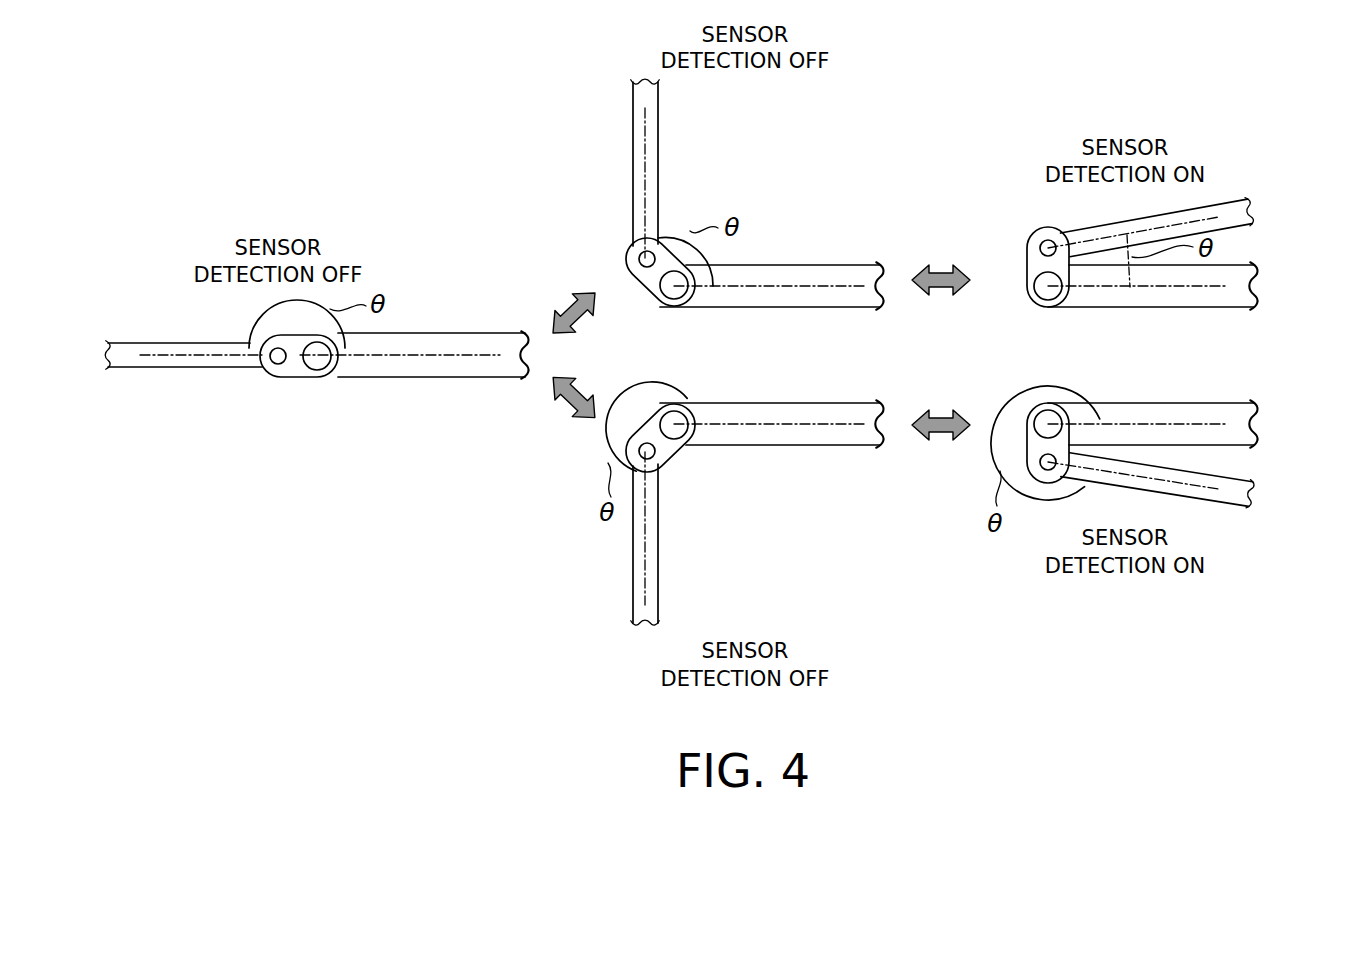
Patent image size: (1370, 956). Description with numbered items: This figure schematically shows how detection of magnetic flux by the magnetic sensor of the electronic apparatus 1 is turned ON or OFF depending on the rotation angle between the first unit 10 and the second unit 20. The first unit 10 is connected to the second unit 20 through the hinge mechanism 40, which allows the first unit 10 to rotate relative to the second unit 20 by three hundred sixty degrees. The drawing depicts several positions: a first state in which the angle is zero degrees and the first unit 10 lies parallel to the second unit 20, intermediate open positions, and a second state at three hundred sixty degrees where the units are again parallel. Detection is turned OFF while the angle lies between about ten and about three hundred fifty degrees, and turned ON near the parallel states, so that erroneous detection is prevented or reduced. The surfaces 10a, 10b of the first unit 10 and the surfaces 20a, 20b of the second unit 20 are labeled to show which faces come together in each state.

The electronic apparatus 1 is at (203, 206).
The first unit 10 is at (185, 341).
The first surface of first member 10a is at (152, 343).
The second surface of first member 10b is at (152, 368).
The second unit 20 is at (418, 333).
The first surface of second member 20a is at (468, 333).
The second surface of second member 20b is at (475, 378).
The hinge mechanism 40 is at (637, 292).